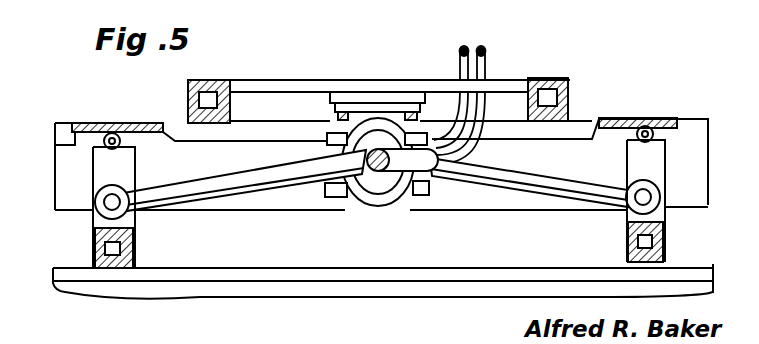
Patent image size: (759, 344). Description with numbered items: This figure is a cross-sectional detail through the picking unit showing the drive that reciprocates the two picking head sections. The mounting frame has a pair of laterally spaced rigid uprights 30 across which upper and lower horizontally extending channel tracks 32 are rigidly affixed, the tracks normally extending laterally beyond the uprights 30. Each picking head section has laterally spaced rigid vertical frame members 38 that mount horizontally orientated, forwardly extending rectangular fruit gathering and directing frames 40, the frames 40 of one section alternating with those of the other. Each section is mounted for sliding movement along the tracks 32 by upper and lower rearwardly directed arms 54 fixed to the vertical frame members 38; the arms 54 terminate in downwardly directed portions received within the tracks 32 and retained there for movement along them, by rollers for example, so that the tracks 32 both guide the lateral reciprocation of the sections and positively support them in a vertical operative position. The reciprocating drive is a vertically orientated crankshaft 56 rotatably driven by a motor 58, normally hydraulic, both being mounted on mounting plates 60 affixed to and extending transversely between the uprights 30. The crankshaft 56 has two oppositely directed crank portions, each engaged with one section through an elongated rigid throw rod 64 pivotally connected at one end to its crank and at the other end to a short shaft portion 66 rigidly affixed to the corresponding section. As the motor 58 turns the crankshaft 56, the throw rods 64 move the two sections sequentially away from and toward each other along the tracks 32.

The rigid uprights 30 is at (562, 104).
The channel tracks 32 is at (618, 120).
The vertical frame members 38 is at (95, 238).
The fruit gathering and directing frames 40 is at (151, 301).
The rearwardly directed arms 54 is at (103, 162).
The crankshaft 56 is at (381, 190).
The motor 58 is at (395, 197).
The mounting plates 60 is at (273, 80).
The throw rod 64 is at (227, 183).
The short shaft portion 66 is at (114, 201).